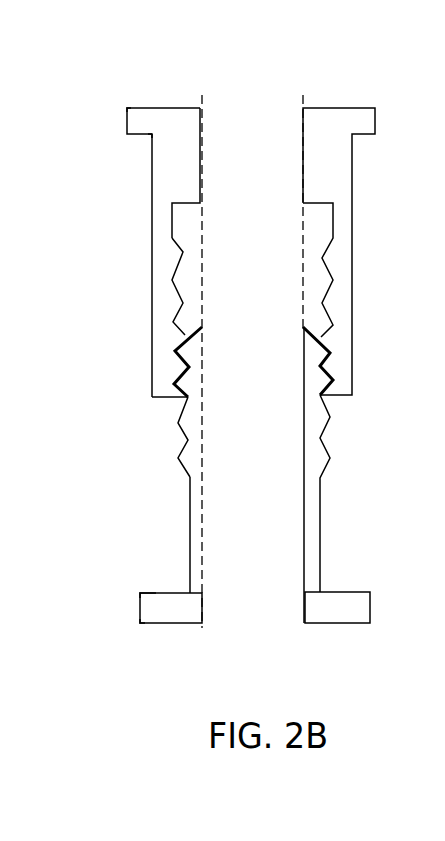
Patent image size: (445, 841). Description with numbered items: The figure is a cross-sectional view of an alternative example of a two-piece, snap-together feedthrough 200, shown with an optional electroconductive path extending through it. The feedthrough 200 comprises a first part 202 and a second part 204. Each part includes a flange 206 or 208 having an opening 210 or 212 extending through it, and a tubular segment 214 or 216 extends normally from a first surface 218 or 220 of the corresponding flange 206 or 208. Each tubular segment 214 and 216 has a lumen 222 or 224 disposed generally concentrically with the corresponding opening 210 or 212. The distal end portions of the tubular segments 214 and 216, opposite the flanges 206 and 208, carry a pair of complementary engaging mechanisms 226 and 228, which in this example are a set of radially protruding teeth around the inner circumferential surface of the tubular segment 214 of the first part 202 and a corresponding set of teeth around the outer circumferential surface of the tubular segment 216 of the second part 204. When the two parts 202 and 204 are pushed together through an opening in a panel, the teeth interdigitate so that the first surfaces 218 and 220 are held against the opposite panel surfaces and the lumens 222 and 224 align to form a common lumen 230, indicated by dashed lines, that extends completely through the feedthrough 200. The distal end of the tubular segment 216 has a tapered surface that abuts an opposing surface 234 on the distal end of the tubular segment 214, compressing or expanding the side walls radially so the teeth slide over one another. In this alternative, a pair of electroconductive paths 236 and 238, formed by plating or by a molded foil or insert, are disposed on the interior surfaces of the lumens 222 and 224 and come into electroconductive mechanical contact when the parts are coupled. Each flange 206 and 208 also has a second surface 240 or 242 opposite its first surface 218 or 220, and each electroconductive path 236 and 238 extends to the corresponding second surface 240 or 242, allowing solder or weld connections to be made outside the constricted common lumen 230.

The feedthrough 200 is at (329, 66).
The first part 202 is at (153, 94).
The second part 204 is at (164, 638).
The flange 206 is at (126, 122).
The flange 208 is at (139, 612).
The opening 210 is at (302, 106).
The opening 212 is at (304, 611).
The tubular segment 214 is at (151, 253).
The tubular segment 216 is at (190, 497).
The first surface 218 is at (136, 137).
The first surface 220 is at (151, 592).
The lumen 222 is at (277, 264).
The lumen 224 is at (277, 474).
The engaging mechanism 226 is at (185, 304).
The engaging mechanism 228 is at (187, 440).
The common lumen 230 is at (204, 226).
The opposing surface 234 is at (158, 398).
The electroconductive path 236 is at (202, 106).
The electroconductive path 238 is at (204, 600).
The second surface 240 is at (128, 107).
The second surface 242 is at (152, 624).